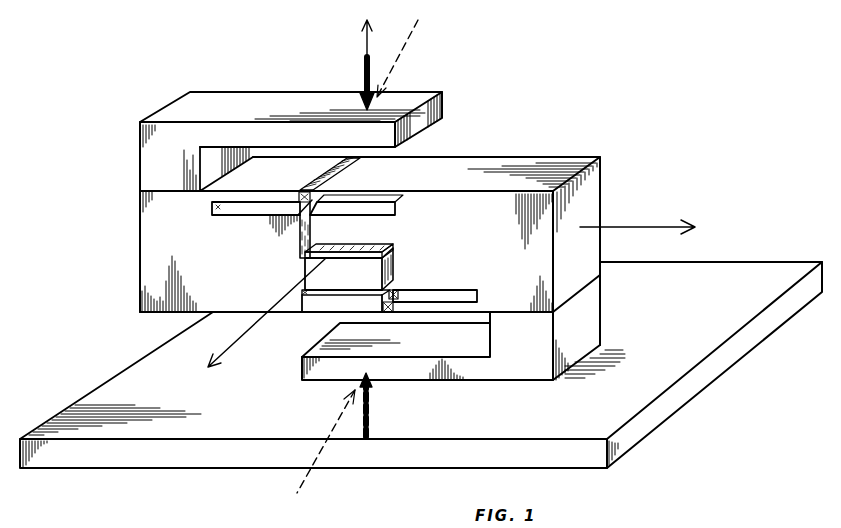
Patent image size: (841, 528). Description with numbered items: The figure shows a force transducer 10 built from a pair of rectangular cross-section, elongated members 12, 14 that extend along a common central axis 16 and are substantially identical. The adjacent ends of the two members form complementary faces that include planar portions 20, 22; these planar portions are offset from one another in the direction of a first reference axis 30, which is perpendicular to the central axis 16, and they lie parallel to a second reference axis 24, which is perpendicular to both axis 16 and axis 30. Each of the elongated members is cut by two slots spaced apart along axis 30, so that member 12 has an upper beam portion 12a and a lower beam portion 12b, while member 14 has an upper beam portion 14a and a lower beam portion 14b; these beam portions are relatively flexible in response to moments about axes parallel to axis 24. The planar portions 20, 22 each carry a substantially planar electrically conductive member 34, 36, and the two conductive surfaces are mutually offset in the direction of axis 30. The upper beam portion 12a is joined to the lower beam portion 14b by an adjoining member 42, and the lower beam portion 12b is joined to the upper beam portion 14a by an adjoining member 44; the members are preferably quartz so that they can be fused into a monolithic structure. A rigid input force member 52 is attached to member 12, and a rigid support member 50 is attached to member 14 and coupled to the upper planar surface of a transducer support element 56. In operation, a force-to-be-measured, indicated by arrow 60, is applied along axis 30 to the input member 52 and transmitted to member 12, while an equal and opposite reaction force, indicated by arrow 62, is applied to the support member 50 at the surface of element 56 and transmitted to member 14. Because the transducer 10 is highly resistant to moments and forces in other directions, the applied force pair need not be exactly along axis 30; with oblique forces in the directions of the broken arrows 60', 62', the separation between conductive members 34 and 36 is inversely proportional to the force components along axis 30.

The transducer 10 is at (95, 338).
The elongated member 12 is at (152, 266).
The upper beam portion 12a is at (256, 197).
The lower beam portion 12b is at (325, 308).
The elongated member 14 is at (516, 213).
The upper beam portion 14a is at (426, 299).
The lower beam portion 14b is at (358, 190).
The central axis 16 is at (640, 228).
The planar portion 20 is at (357, 255).
The planar portion 22 is at (373, 247).
The second reference axis 24 is at (228, 352).
The first reference axis 30 is at (367, 38).
The electrically conductive member 34 is at (312, 256).
The electrically conductive member 36 is at (328, 251).
The adjoining member 42 is at (328, 170).
The adjoining member 44 is at (392, 292).
The rigid support member 50 is at (523, 370).
The rigid input force member 52 is at (155, 152).
The transducer support element 56 is at (700, 375).
The arrow 60 is at (338, 83).
The broken arrow 60' is at (412, 58).
The arrow 62 is at (388, 405).
The broken arrow 62' is at (319, 441).